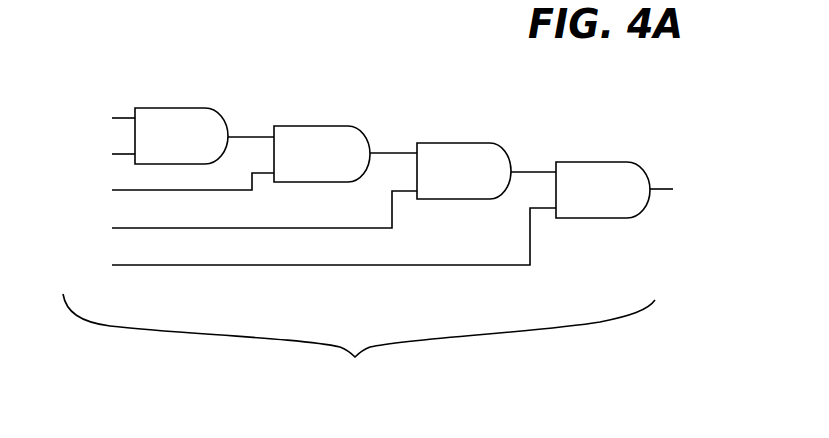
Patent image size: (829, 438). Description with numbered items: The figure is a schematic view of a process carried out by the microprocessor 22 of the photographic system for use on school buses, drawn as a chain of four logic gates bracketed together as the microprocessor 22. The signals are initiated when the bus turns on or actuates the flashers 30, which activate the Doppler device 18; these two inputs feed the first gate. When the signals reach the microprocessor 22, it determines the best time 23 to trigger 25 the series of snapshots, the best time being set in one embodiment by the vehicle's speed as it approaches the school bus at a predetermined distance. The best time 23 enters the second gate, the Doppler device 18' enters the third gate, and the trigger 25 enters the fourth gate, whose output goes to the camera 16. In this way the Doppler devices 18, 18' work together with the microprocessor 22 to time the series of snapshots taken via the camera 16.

The flashers 30 is at (101, 118).
The Doppler device 18 is at (102, 154).
The best time 23 is at (171, 188).
The Doppler device 18' is at (242, 215).
The trigger 25 is at (312, 242).
The camera 16 is at (680, 192).
The microprocessor 22 is at (359, 257).